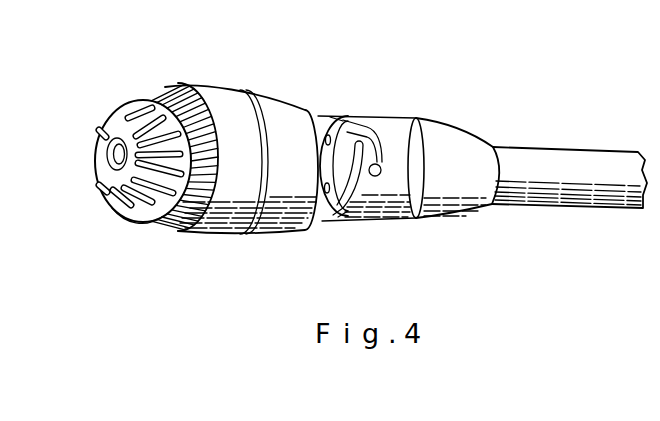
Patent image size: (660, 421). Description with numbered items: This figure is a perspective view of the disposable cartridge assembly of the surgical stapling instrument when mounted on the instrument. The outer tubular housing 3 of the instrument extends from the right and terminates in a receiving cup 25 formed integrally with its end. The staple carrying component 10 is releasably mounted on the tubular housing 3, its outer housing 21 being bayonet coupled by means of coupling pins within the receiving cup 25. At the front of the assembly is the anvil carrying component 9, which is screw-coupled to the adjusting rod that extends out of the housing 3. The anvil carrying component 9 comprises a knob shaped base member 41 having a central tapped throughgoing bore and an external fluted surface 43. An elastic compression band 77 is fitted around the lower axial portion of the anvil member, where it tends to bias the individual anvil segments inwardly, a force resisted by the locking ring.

The outer tubular housing 3 is at (560, 146).
The anvil carrying component 9 is at (126, 101).
The staple carrying component 10 is at (281, 93).
The outer housing 21 is at (273, 222).
The receiving cup 25 is at (440, 122).
The knob shaped base member 41 is at (100, 178).
The external fluted surface 43 is at (133, 208).
The elastic compression band 77 is at (196, 92).